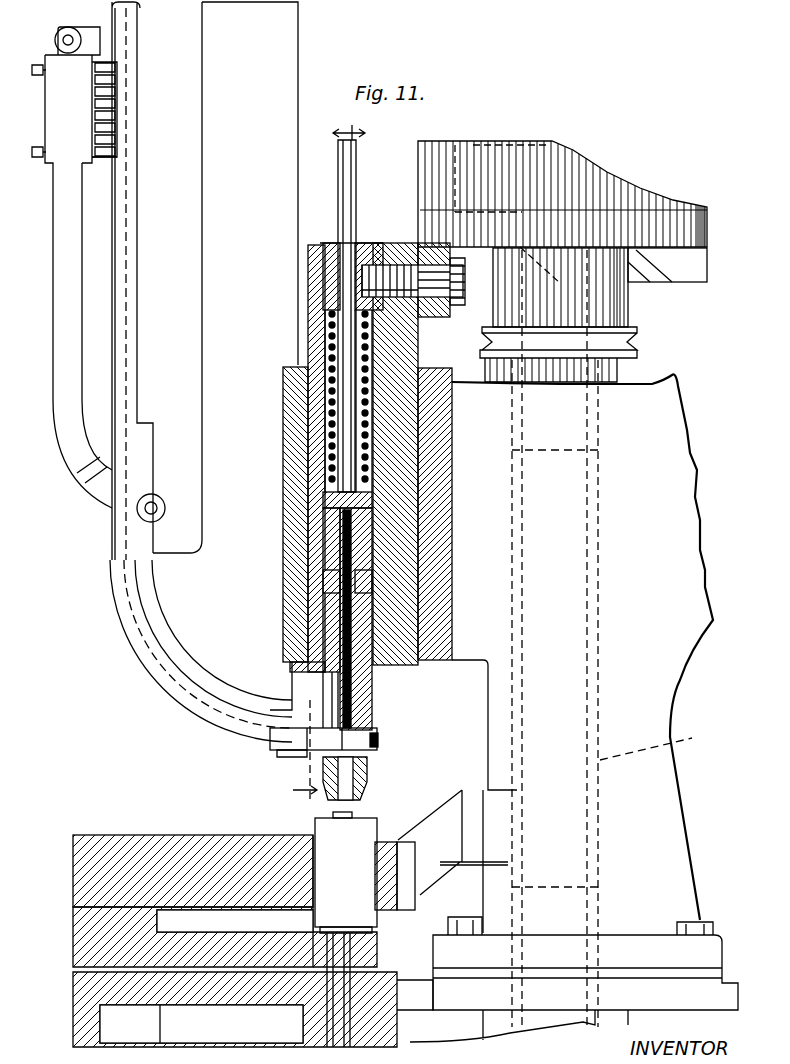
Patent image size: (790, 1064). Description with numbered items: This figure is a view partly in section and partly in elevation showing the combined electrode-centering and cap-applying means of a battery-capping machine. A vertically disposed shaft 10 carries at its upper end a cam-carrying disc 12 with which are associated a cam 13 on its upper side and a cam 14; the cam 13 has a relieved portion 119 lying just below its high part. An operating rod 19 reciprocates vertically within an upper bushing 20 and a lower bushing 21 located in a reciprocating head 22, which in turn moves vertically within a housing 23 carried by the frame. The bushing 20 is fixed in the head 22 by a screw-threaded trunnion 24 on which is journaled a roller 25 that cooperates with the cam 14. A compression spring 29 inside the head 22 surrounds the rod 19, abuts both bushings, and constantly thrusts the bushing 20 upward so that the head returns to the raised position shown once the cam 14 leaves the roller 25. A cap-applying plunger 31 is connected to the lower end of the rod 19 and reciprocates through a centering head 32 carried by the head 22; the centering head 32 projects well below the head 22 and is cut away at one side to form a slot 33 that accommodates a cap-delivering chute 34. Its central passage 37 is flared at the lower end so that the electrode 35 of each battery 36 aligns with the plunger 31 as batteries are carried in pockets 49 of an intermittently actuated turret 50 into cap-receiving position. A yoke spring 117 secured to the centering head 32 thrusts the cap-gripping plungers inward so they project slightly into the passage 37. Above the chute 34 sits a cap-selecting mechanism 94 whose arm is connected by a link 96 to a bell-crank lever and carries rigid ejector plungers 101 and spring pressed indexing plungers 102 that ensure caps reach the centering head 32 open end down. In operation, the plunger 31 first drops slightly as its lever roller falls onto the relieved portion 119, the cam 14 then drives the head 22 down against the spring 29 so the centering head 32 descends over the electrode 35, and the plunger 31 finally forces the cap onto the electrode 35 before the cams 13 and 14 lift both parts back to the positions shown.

The vertically disposed shaft 10 is at (568, 646).
The cam-carrying disc 12 is at (720, 222).
The cam 13 is at (590, 162).
The cam 14 is at (705, 266).
The operating rod 19 is at (358, 145).
The bushing 20 is at (366, 244).
The bushing 21 is at (318, 535).
The reciprocating head 22 is at (418, 357).
The housing 23 is at (452, 490).
The screw-threaded trunnion 24 is at (392, 265).
The roller 25 is at (458, 250).
The compression spring 29 is at (312, 330).
The cap-applying plunger 31 is at (323, 578).
The centering head 32 is at (372, 712).
The slot 33 is at (330, 694).
The cap-delivering chute 34 is at (176, 709).
The electrode 35 is at (352, 814).
The battery 36 is at (346, 932).
The central passage 37 is at (353, 775).
The pocket 49 is at (310, 862).
The intermittently actuated turret 50 is at (170, 840).
The cap-selecting mechanism 94 is at (47, 273).
The link 96 is at (88, 30).
The rigid ejector plunger 101 is at (115, 120).
The spring pressed indexing plunger 102 is at (98, 158).
The yoke spring 117 is at (378, 740).
The relieved portion 119 is at (520, 140).